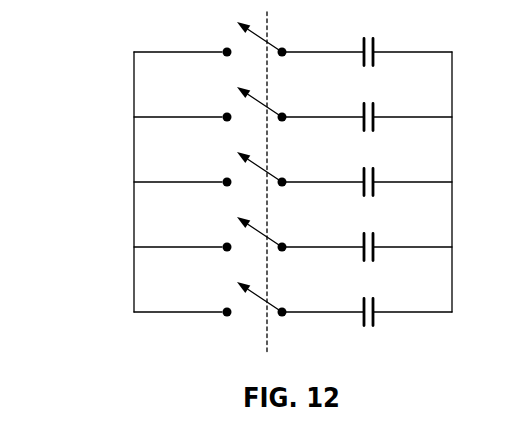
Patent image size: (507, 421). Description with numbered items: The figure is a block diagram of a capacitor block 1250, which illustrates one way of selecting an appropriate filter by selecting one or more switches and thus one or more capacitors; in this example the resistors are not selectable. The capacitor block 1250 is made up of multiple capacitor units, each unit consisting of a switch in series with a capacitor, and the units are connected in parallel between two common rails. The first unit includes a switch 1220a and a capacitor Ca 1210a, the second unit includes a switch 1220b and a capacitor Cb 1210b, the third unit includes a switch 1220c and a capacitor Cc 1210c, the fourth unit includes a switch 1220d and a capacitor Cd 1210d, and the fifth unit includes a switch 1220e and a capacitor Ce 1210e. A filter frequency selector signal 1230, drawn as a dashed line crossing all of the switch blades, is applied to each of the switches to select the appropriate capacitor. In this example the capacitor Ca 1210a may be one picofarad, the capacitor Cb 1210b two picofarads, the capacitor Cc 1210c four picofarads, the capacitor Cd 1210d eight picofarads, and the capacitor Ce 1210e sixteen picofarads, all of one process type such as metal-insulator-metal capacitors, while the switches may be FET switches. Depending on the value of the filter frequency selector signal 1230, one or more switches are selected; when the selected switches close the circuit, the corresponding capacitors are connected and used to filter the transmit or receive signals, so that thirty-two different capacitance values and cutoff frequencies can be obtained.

The capacitor block 1250 is at (110, 199).
The filter frequency selector signal 1230 is at (281, 342).
The switch 1220a is at (264, 39).
The switch 1220b is at (264, 104).
The switch 1220c is at (264, 169).
The switch 1220d is at (264, 234).
The switch 1220e is at (264, 299).
The capacitor Ca 1210a is at (380, 45).
The capacitor Cb 1210b is at (380, 110).
The capacitor Cc 1210c is at (380, 175).
The capacitor Cd 1210d is at (380, 240).
The capacitor Ce 1210e is at (380, 305).